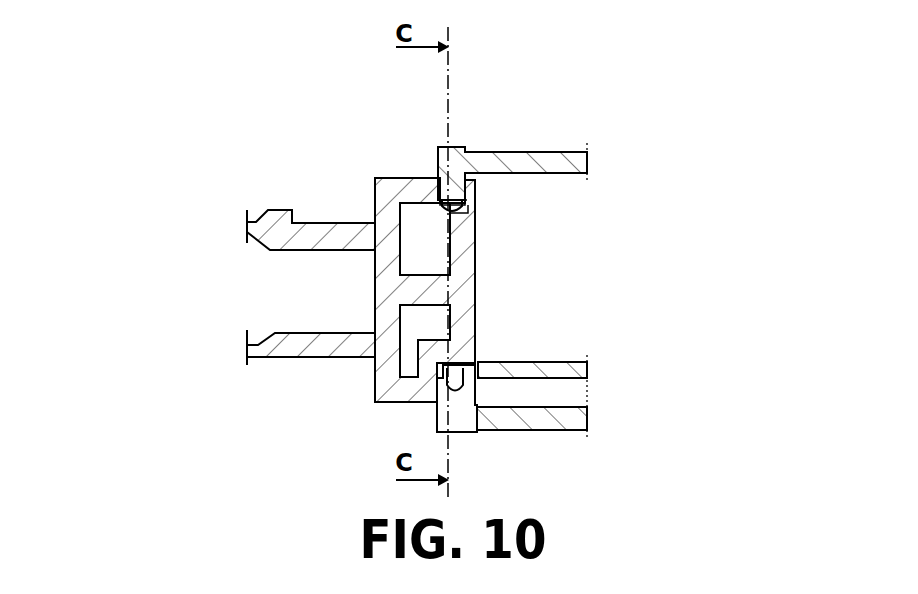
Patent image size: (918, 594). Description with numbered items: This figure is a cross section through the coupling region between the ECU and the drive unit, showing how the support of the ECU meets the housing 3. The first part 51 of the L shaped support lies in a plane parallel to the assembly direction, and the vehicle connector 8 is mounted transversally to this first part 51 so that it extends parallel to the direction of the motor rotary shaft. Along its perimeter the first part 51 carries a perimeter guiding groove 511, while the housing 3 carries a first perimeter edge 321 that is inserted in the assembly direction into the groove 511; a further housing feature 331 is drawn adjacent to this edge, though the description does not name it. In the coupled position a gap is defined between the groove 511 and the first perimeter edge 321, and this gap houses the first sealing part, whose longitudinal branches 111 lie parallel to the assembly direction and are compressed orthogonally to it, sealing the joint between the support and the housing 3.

The housing 3 is at (520, 152).
The vehicle connector 8 is at (328, 220).
The first part 51 is at (378, 401).
The longitudinal branches 111 is at (468, 208).
The first perimeter edge 321 is at (440, 158).
The snap slot 331 is at (435, 183).
The perimeter guiding groove 511 is at (445, 363).